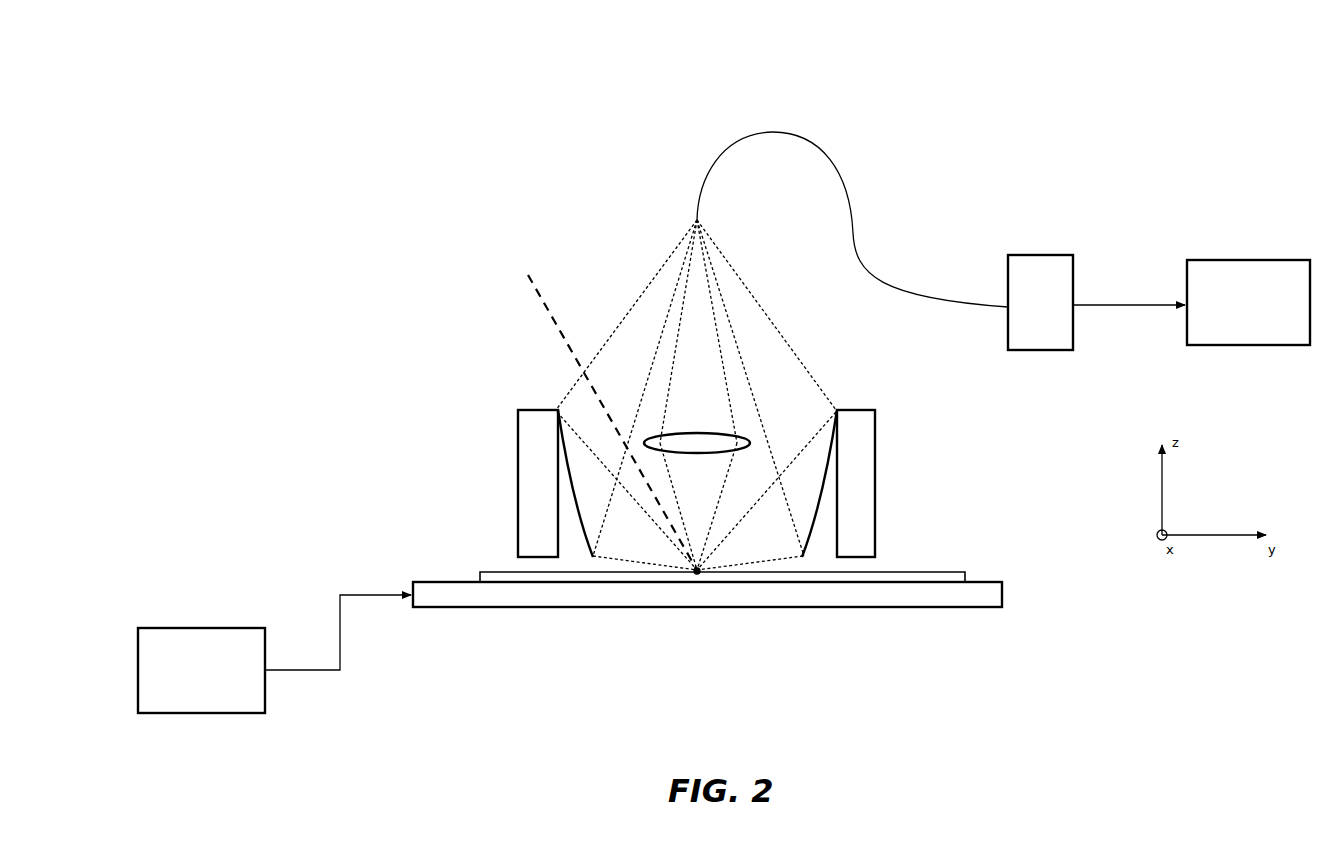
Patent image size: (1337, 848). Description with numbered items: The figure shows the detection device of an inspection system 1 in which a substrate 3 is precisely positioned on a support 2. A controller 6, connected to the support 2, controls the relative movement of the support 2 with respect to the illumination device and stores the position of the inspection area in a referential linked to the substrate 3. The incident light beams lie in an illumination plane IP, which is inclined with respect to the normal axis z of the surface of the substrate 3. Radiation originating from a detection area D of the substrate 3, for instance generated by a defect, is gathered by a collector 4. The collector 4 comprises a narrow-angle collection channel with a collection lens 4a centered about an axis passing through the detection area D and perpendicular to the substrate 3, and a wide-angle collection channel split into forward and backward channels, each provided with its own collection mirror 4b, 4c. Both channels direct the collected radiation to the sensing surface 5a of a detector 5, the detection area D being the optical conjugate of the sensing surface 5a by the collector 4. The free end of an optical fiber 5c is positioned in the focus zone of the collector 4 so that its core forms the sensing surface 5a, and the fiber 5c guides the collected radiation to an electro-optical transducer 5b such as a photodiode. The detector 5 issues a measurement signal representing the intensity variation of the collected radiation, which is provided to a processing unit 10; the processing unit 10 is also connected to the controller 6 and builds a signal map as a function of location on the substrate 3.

The inspection system 1 is at (497, 186).
The support 2 is at (1003, 595).
The substrate 3 is at (480, 572).
The collector 4 is at (268, 333).
The collection lens 4a is at (750, 440).
The collection mirror 4b is at (875, 440).
The collection mirror 4c is at (518, 505).
The detector 5 is at (713, 43).
The sensing surface 5a is at (693, 220).
The electro-optical transducer 5b is at (1008, 273).
The optical fiber 5c is at (710, 160).
The controller 6 is at (138, 628).
The processing unit 10 is at (1220, 260).
The illumination plane IP is at (596, 417).
The detection area D is at (698, 574).